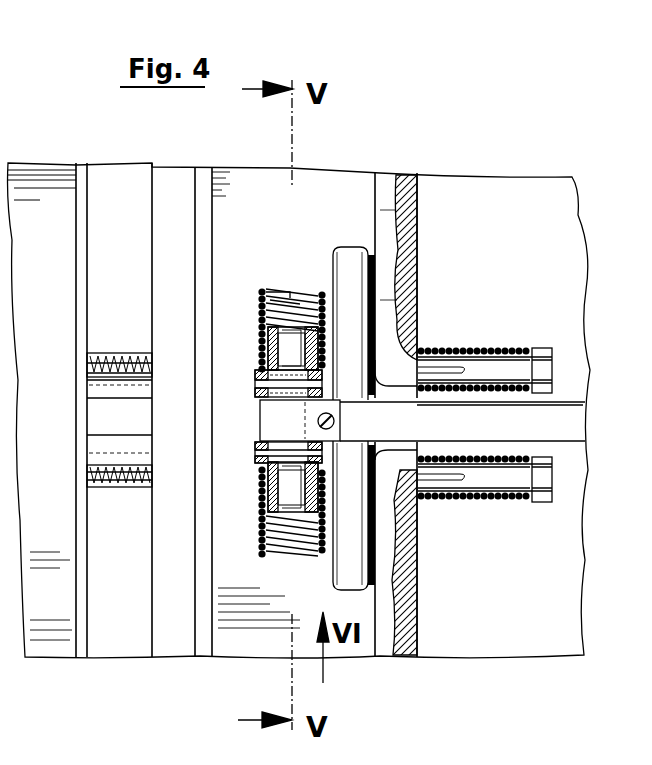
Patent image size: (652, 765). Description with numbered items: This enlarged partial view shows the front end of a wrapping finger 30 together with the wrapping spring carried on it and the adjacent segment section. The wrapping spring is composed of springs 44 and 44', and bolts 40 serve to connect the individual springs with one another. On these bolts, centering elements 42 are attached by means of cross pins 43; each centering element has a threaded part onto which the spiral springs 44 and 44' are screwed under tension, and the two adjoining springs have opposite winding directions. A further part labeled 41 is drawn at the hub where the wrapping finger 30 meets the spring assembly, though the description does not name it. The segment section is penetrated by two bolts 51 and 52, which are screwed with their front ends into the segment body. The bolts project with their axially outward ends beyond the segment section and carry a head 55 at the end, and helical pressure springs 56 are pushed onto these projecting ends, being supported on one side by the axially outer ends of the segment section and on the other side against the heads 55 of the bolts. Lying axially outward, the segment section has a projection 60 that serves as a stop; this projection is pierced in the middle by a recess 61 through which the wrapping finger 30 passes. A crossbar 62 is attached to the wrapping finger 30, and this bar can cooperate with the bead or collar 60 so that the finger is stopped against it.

The wrapping finger 30 is at (555, 412).
The bolt 40 is at (288, 333).
The screw 41 is at (335, 413).
The centering element 42 is at (266, 352).
The cross pin 43 is at (255, 381).
The spring 44 is at (272, 328).
The spring 44' is at (272, 511).
The bolt 51 is at (124, 356).
The bolt 52 is at (124, 489).
The head 55 is at (543, 497).
The helical pressure spring 56 is at (520, 347).
The projection 60 is at (385, 238).
The recess 61 is at (400, 385).
The crossbar 62 is at (357, 317).